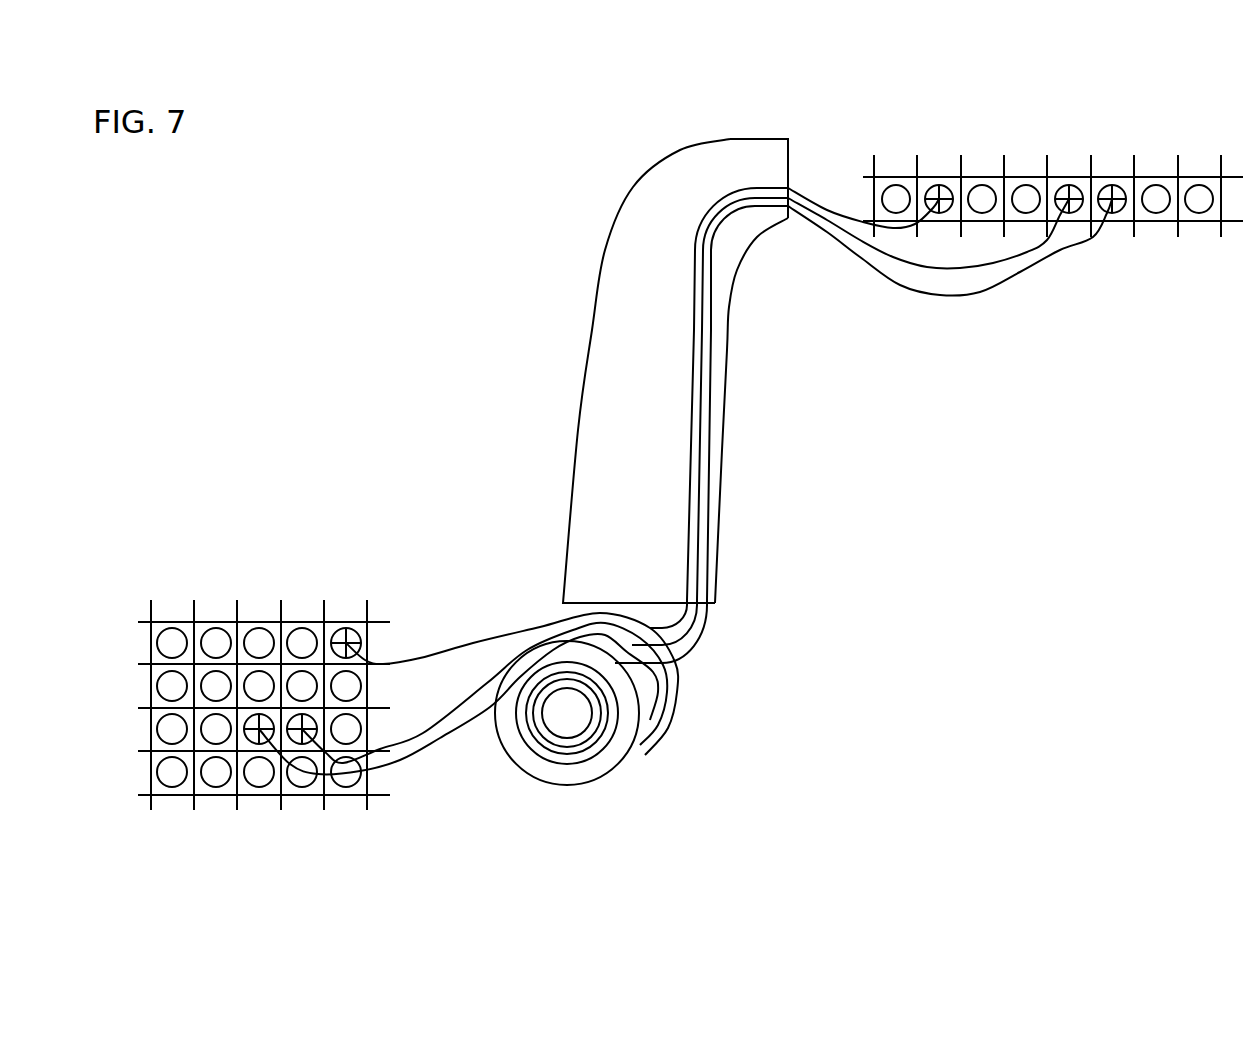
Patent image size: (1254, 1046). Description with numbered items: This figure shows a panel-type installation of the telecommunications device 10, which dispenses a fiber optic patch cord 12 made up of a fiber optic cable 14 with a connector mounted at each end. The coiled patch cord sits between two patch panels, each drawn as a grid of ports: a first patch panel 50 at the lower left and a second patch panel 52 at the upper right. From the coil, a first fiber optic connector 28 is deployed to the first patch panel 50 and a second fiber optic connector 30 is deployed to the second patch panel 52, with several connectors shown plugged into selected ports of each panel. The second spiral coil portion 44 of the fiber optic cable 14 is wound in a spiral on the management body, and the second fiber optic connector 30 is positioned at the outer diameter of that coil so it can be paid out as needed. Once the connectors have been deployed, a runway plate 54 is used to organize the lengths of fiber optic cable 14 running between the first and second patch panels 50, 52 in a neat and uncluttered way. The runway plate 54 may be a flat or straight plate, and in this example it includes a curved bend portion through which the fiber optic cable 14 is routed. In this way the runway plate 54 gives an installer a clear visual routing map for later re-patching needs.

The telecommunications device 10 is at (624, 768).
The fiber optic patch cord 12 is at (558, 792).
The fiber optic cable 14 is at (686, 340).
The first fiber optic connector 28 is at (939, 186).
The second fiber optic connector 30 is at (345, 635).
The second spiral coil portion 44 is at (610, 749).
The first patch panel 50 is at (264, 676).
The second patch panel 52 is at (1053, 132).
The runway plate 54 is at (647, 215).